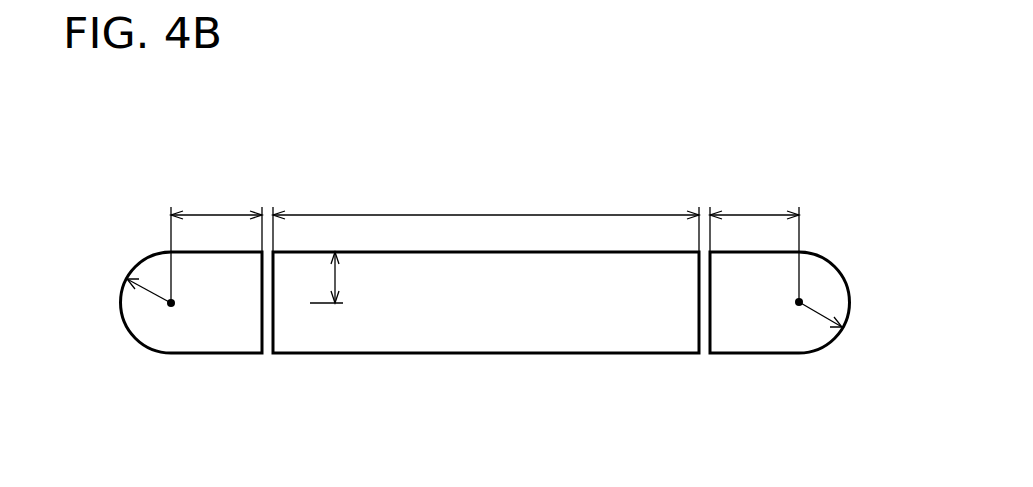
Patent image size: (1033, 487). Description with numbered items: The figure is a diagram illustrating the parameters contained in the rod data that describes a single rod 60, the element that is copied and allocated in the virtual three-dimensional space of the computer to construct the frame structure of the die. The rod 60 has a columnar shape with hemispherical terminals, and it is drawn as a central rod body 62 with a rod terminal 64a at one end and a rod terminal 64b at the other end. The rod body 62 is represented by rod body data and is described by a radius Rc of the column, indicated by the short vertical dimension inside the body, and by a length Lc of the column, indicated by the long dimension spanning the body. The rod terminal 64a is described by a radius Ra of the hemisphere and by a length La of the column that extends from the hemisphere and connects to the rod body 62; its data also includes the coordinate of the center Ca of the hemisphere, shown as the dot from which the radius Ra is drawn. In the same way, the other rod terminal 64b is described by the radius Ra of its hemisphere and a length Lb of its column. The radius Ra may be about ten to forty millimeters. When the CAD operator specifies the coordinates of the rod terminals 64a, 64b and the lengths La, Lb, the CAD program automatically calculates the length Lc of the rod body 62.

The rod 60 is at (655, 162).
The rod body 62 is at (458, 362).
The rod terminal 64a is at (192, 363).
The rod terminal 64b is at (773, 363).
The length of the column of the rod terminal La is at (216, 244).
The length of the column of the other rod terminal Lb is at (754, 243).
The length of the rod body Lc is at (486, 219).
The radius of the hemisphere Ra is at (148, 295).
The radius of the column Rc is at (337, 278).
The center of the hemisphere Ca is at (171, 303).